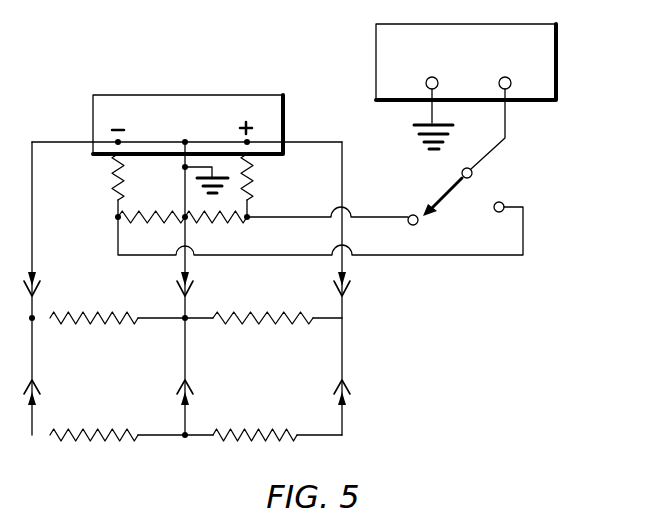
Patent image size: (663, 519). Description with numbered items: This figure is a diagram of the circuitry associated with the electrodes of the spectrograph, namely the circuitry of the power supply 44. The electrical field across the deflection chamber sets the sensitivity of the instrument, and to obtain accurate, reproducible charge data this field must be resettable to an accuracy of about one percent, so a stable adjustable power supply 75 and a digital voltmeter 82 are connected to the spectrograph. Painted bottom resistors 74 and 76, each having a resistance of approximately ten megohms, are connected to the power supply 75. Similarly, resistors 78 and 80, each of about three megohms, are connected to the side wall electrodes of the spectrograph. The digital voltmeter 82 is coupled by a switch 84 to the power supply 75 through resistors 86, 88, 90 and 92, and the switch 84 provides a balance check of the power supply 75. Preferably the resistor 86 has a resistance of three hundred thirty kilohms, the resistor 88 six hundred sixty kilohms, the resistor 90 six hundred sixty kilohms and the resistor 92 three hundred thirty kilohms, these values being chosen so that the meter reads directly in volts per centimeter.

The power supply 44 is at (548, 148).
The painted bottom resistor 74 is at (98, 316).
The power supply 75 is at (273, 97).
The painted bottom resistor 76 is at (258, 316).
The resistor 78 is at (100, 433).
The resistor 80 is at (255, 433).
The digital voltmeter 82 is at (548, 53).
The switch 84 is at (455, 187).
The resistor 86 is at (158, 211).
The resistor 88 is at (253, 190).
The resistor 90 is at (117, 183).
The resistor 92 is at (230, 221).